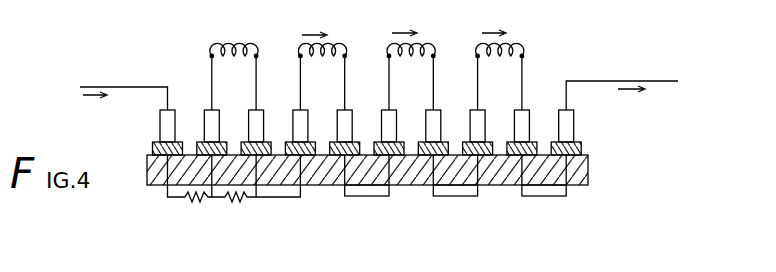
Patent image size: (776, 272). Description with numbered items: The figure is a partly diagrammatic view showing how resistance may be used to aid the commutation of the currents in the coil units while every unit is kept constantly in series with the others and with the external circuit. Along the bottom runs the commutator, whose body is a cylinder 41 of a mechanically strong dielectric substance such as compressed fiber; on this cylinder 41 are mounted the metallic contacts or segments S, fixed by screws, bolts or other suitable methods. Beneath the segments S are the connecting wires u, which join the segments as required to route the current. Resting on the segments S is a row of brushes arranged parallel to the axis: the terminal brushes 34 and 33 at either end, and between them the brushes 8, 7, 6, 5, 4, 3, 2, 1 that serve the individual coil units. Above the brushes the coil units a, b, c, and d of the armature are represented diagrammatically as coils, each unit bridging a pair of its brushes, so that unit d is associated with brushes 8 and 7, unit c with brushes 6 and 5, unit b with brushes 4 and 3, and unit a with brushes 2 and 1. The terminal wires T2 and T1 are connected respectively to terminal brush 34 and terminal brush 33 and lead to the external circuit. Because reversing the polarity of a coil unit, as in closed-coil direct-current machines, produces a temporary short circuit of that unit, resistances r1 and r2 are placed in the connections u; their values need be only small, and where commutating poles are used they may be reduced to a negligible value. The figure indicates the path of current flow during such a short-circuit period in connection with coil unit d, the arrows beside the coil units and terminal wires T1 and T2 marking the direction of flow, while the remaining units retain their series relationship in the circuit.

The cylinder 41 is at (588, 165).
The segments S is at (584, 142).
The terminal brush 34 is at (158, 121).
The terminal brush 33 is at (577, 113).
The brush 1 is at (529, 118).
The brush 2 is at (489, 118).
The brush 3 is at (444, 118).
The brush 4 is at (400, 118).
The brush 5 is at (357, 118).
The brush 6 is at (315, 118).
The brush 7 is at (265, 118).
The brush 8 is at (223, 117).
The coil unit a is at (525, 22).
The coil unit b is at (436, 25).
The coil unit c is at (335, 40).
The coil unit d is at (250, 40).
The terminal wire T1 is at (617, 80).
The terminal wire T2 is at (118, 82).
The resistance r1 is at (235, 208).
The resistance r2 is at (190, 205).
The connecting wires u is at (360, 200).